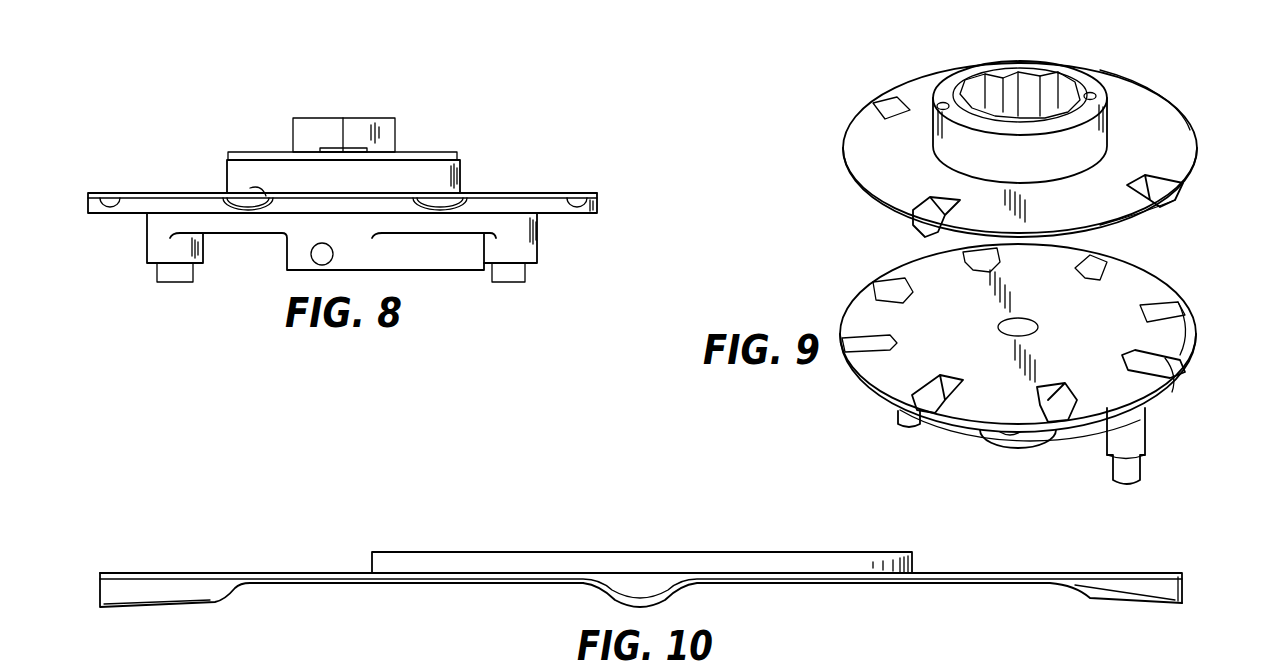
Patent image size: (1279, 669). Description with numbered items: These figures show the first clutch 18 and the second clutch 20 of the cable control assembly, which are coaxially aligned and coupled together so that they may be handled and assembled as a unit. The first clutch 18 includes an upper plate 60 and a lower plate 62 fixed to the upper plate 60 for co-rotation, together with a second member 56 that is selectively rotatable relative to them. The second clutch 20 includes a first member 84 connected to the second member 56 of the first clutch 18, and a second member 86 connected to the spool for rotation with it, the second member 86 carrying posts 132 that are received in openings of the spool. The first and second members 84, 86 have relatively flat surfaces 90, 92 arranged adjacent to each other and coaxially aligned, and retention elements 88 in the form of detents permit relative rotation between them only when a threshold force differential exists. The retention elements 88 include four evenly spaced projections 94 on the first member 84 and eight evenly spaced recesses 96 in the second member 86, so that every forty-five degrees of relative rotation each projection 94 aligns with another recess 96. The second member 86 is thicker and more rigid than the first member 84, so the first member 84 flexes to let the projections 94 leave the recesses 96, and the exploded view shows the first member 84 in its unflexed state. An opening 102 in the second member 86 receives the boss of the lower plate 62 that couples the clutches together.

In FIG. 8, the first clutch 18 is at (466, 108).
In FIG. 8, the second clutch 20 is at (586, 226).
In FIG. 9, the second clutch 20 is at (1202, 90).
In FIG. 8, the second member 56 is at (240, 170).
In FIG. 9, the second member 56 is at (1034, 170).
In FIG. 8, the upper plate 60 is at (257, 152).
In FIG. 10, the lower plate 62 is at (658, 561).
In FIG. 8, the first member 84 is at (541, 193).
In FIG. 9, the first member 84 is at (1145, 113).
In FIG. 10, the first member 84 is at (1068, 577).
In FIG. 8, the second member 86 is at (559, 205).
In FIG. 9, the second member 86 is at (1155, 392).
In FIG. 9, the retention elements 88 is at (1193, 182).
In FIG. 9, the flat surface 90 is at (1147, 209).
In FIG. 10, the flat surface 90 is at (935, 584).
In FIG. 9, the flat surface 92 is at (1143, 288).
In FIG. 8, the projections 94 is at (226, 207).
In FIG. 9, the projections 94 is at (913, 228).
In FIG. 8, the recesses 96 is at (256, 194).
In FIG. 9, the recesses 96 is at (1170, 370).
In FIG. 9, the opening 102 is at (1032, 324).
In FIG. 9, the posts 132 is at (1140, 433).